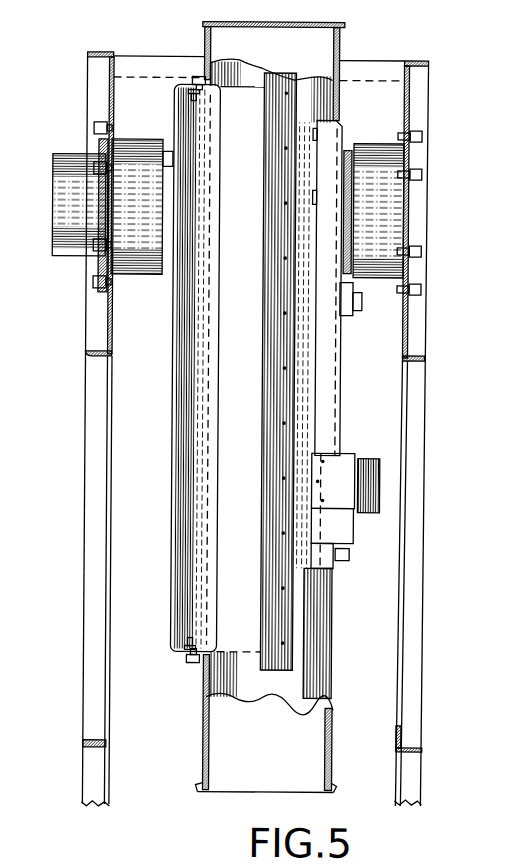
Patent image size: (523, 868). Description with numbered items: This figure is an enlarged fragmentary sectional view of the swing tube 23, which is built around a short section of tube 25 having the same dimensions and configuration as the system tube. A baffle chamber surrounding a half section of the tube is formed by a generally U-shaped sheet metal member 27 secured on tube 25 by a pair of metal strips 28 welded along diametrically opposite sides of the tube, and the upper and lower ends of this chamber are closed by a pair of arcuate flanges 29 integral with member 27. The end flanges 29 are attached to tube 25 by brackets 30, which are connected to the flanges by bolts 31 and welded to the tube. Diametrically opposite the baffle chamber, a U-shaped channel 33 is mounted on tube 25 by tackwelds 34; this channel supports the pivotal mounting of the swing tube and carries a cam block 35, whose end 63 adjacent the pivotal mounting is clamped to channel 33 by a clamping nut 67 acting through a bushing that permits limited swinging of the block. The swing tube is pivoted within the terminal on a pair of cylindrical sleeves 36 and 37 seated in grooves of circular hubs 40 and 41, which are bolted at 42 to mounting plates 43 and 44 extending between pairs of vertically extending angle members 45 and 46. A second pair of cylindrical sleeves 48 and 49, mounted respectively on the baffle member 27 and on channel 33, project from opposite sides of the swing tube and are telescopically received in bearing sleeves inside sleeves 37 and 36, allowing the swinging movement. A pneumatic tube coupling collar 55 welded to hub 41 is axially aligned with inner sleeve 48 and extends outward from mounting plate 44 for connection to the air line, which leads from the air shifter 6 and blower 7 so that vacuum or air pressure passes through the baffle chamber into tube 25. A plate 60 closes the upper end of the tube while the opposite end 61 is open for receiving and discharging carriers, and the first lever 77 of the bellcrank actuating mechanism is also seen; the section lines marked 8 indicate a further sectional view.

The air shifter 6 is at (189, 10).
The blower 7 is at (58, 207).
The section line 8- 8 is at (168, 402).
The swing tube 23 is at (150, 462).
The tube section 25 is at (317, 637).
The U-shaped sheet metal member 27 is at (180, 603).
The metal strips 28 is at (285, 652).
The arcuate flanges 29 is at (230, 78).
The brackets 30 is at (186, 105).
The bolts 31 is at (193, 77).
The U-shaped channel 33 is at (321, 137).
The tackwelds 34 is at (315, 197).
The cam block 35 is at (345, 530).
The cylindrical sleeve 36 is at (418, 160).
The cylindrical sleeve 37 is at (131, 166).
The circular hub 40 is at (404, 275).
The circular hub 41 is at (100, 272).
The bolts 42 is at (98, 288).
The mounting plate 43 is at (406, 93).
The mounting plate 44 is at (105, 78).
The angle members 45 is at (415, 418).
The angle members 46 is at (94, 535).
The cylindrical sleeve 48 is at (166, 200).
The cylindrical sleeve 49 is at (347, 215).
The pneumatic tube coupling collar 55 is at (68, 283).
The plate 60 is at (291, 22).
The tube end 61 is at (237, 786).
The end of cam block 63 is at (341, 288).
The clamping nut 67 is at (358, 308).
The first lever 77 is at (380, 500).